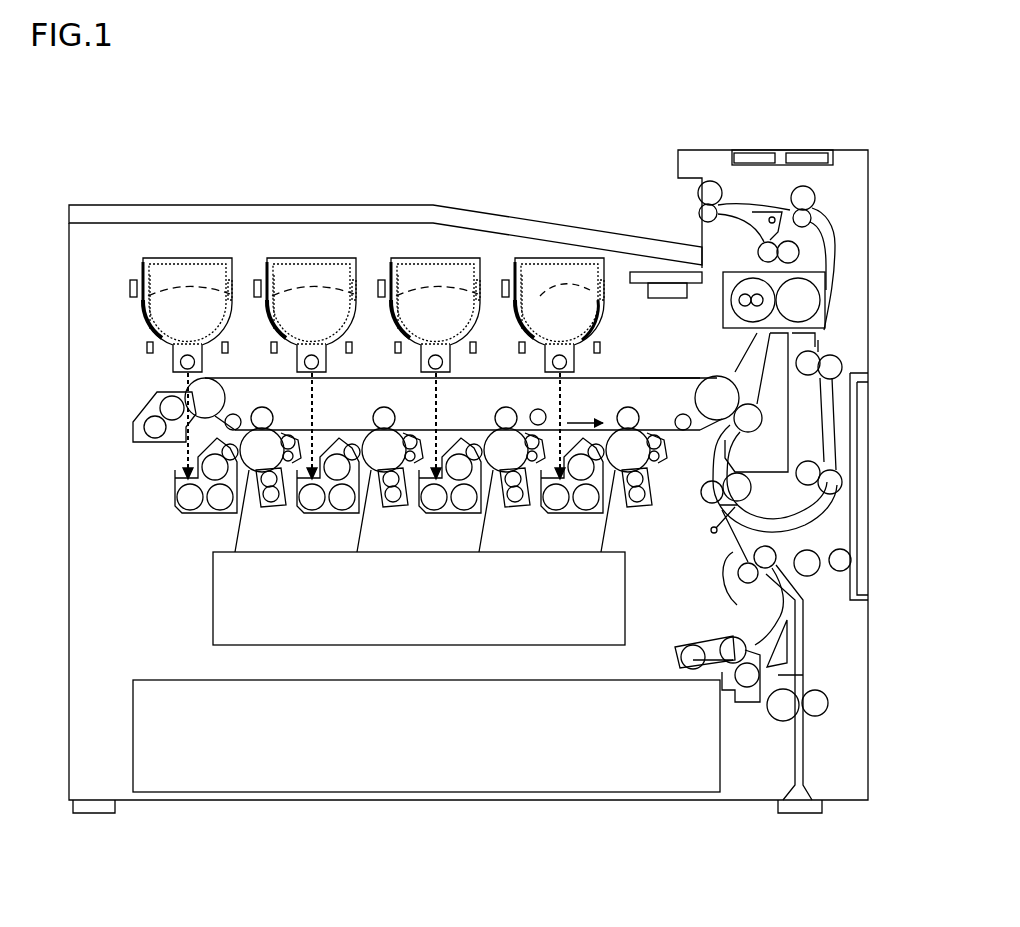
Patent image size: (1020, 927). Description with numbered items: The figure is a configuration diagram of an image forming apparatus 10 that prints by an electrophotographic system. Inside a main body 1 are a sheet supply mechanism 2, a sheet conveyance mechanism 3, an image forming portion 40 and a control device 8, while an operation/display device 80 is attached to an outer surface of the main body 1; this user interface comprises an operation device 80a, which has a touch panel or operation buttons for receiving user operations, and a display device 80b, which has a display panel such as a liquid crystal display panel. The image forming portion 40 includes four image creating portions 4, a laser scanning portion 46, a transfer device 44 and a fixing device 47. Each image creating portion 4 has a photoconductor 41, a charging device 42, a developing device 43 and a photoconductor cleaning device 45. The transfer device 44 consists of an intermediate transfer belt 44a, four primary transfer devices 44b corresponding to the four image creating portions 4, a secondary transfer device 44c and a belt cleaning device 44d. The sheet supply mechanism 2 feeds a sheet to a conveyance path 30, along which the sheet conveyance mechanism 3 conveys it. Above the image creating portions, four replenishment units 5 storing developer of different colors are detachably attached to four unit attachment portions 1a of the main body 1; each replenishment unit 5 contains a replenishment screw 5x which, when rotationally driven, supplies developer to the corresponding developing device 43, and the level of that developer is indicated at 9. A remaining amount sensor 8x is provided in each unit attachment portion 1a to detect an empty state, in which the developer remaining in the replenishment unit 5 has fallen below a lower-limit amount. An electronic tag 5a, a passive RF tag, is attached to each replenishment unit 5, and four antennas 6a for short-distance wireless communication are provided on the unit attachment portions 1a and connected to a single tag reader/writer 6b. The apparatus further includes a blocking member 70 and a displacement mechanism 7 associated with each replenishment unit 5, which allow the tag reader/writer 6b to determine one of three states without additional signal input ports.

The main body 1 is at (69, 451).
The unit attachment portion 1a is at (606, 326).
The sheet supply mechanism 2 is at (738, 716).
The sheet conveyance mechanism 3 is at (828, 676).
The image creating portion 4 is at (251, 427).
The replenishment unit 5 is at (213, 256).
The electronic tag 5a is at (143, 290).
The replenishment screw 5x is at (177, 358).
The antenna 6a is at (130, 288).
The tag reader/writer 6b is at (665, 298).
The displacement mechanism 7 is at (147, 322).
The control device 8 is at (656, 272).
The remaining amount sensor 8x is at (144, 352).
The toner level 9 is at (603, 288).
The image forming apparatus 10 is at (128, 158).
The conveyance path 30 is at (753, 572).
The image forming portion 40 is at (118, 412).
The photoconductor 41 is at (291, 465).
The charging device 42 is at (268, 509).
The developing device 43 is at (202, 515).
The transfer device 44 is at (754, 391).
The intermediate transfer belt 44a is at (655, 378).
The primary transfer device 44b is at (262, 407).
The secondary transfer device 44c is at (763, 418).
The belt cleaning device 44d is at (143, 443).
The photoconductor cleaning device 45 is at (303, 445).
The laser scanning portion 46 is at (629, 602).
The fixing device 47 is at (827, 290).
The blocking member 70 is at (143, 304).
The operation/display device 80 is at (833, 156).
The operation device 80a is at (762, 150).
The display device 80b is at (812, 150).